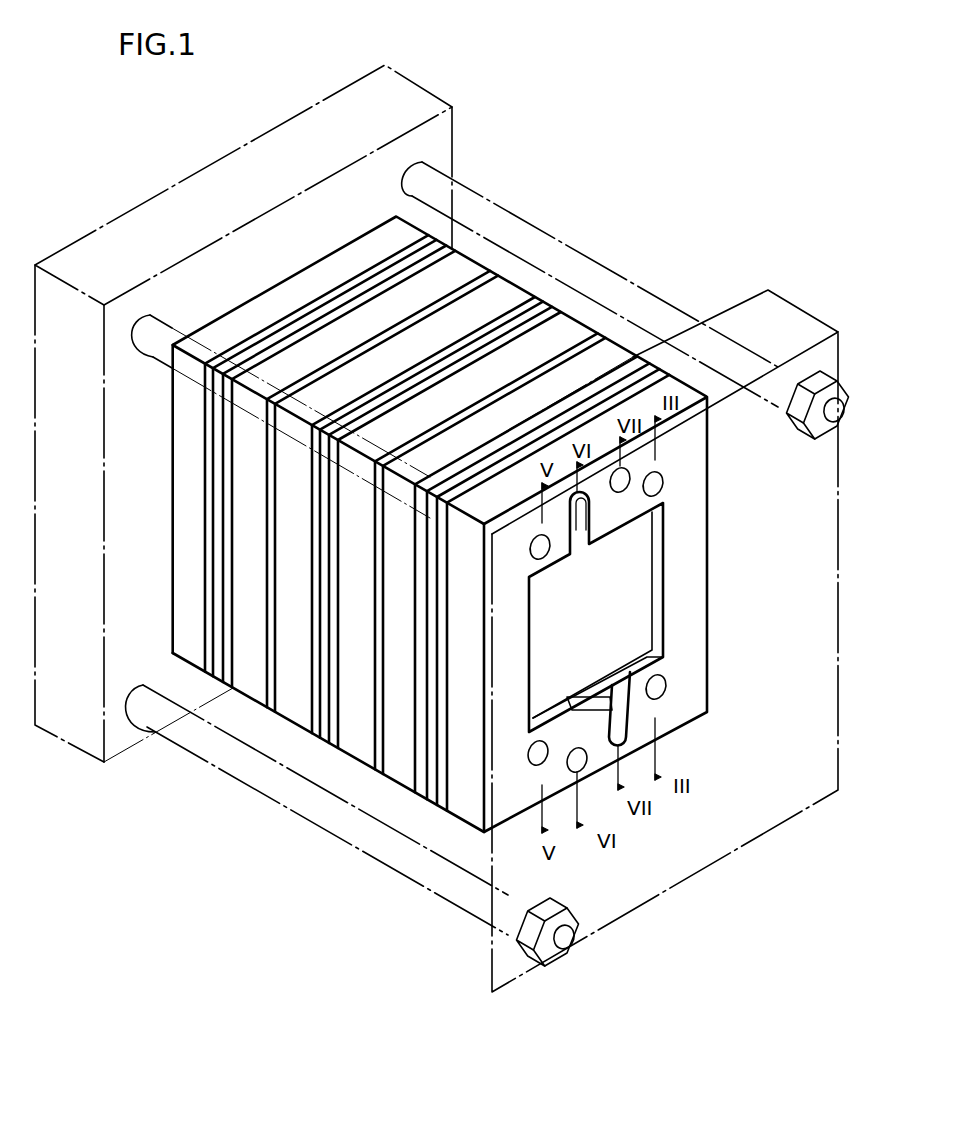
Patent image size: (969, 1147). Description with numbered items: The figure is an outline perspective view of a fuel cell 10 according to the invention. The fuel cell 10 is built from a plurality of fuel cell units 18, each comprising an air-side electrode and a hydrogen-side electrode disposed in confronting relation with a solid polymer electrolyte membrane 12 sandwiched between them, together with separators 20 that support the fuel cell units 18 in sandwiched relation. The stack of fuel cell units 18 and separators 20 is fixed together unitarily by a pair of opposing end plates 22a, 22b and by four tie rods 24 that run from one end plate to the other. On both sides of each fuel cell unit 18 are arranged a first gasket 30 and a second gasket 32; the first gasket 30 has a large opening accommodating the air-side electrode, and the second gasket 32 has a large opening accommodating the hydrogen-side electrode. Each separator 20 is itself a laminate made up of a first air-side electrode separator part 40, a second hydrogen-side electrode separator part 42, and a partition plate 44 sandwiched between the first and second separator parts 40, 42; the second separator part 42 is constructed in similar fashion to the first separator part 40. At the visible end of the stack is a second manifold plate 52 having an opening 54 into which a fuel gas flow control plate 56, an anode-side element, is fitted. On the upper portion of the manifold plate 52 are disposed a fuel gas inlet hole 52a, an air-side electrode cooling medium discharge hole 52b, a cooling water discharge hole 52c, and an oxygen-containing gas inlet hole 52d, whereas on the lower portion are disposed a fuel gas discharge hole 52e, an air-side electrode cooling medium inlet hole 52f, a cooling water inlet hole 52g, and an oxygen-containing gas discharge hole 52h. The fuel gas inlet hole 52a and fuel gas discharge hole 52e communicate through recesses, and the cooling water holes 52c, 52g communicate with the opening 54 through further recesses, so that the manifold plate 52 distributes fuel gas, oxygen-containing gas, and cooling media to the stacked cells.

The fuel cell 10 is at (558, 58).
The solid polymer electrolyte membrane 12 is at (222, 687).
The fuel cell unit 18 is at (143, 818).
The separator 20 is at (644, 169).
The end plate 22a is at (66, 742).
The end plate 22b is at (806, 806).
The tie rod 24 is at (334, 838).
The first gasket 30 is at (213, 680).
The second gasket 32 is at (230, 683).
The first air-side electrode separator part 40 is at (412, 227).
The second hydrogen-side electrode separator part 42 is at (473, 257).
The partition plate 44 is at (498, 276).
The second manifold plate 52 is at (705, 437).
The fuel gas inlet hole 52a is at (664, 482).
The air-side electrode cooling medium discharge hole 52b is at (630, 490).
The cooling water discharge hole 52c is at (592, 506).
The oxygen-containing gas inlet hole 52d is at (548, 560).
The fuel gas discharge hole 52e is at (536, 768).
The air-side electrode cooling medium inlet hole 52f is at (582, 772).
The cooling water inlet hole 52g is at (628, 668).
The oxygen-containing gas discharge hole 52h is at (667, 684).
The opening 54 is at (639, 651).
The fuel gas flow control plate 56 is at (645, 598).